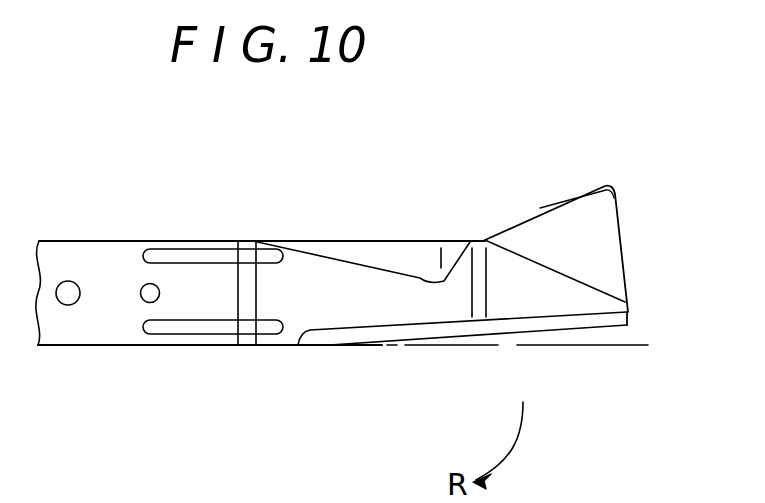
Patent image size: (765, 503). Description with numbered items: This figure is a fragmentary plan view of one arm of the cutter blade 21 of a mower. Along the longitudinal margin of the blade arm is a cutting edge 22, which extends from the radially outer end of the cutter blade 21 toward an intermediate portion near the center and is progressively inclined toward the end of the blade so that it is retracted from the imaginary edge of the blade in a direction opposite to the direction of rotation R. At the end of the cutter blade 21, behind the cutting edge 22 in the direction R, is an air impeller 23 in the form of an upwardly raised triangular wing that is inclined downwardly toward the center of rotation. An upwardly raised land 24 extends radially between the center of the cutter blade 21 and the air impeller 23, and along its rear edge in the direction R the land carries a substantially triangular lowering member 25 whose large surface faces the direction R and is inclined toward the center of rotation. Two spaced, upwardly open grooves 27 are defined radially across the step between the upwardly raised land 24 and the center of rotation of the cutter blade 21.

The cutter blade 21 is at (648, 288).
The cutting edge 22 is at (507, 326).
The air impeller 23 is at (590, 218).
The upwardly raised land 24 is at (341, 310).
The lowering member 25 is at (424, 260).
The grooves 27 is at (203, 256).